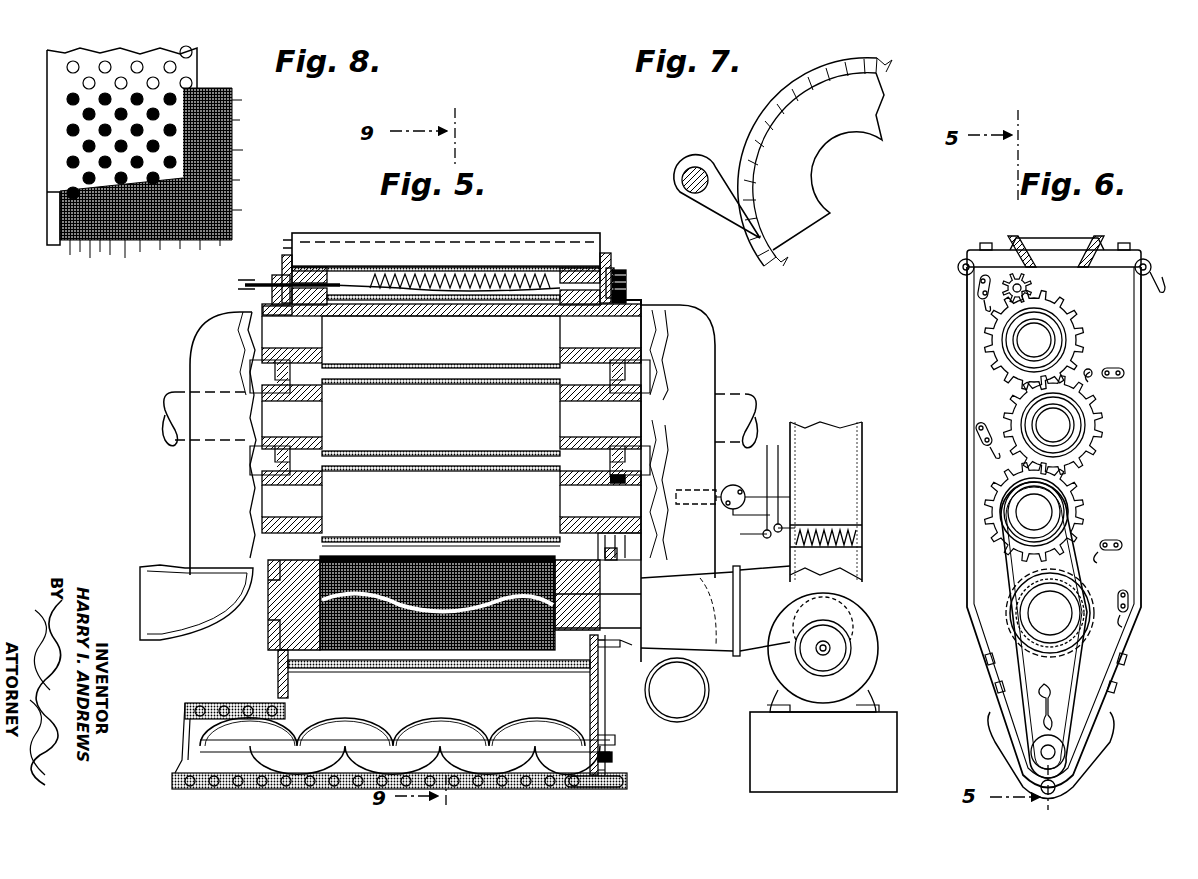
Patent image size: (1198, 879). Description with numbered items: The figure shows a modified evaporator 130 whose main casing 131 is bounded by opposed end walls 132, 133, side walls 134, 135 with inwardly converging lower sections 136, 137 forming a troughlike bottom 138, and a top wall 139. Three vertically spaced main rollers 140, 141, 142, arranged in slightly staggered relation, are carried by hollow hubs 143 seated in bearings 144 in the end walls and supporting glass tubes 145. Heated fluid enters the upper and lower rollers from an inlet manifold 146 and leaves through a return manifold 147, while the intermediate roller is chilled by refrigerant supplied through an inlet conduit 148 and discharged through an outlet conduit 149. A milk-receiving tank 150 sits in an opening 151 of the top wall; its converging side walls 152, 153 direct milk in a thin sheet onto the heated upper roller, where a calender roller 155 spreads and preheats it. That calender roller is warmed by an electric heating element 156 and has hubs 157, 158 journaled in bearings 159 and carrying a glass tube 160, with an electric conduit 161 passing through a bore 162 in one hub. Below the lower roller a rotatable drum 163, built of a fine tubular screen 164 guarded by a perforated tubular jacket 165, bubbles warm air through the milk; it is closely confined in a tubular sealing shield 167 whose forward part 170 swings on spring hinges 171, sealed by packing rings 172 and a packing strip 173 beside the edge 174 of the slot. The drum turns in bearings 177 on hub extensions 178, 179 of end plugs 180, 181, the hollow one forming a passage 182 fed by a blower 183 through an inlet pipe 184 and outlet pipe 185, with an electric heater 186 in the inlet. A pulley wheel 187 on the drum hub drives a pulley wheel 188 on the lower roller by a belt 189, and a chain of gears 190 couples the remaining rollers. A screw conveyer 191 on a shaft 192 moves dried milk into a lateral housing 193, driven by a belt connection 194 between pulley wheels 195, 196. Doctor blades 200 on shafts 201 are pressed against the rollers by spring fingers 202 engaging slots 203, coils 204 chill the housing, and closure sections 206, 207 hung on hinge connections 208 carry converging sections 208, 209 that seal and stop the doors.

In FIG. 5, the evaporator 130 is at (546, 230).
In FIG. 6, the evaporator 130 is at (1156, 235).
In FIG. 5, the main casing 131 is at (350, 222).
In FIG. 6, the main casing 131 is at (962, 383).
In FIG. 5, the end wall 132 is at (283, 240).
In FIG. 5, the end wall 133 is at (612, 254).
In FIG. 6, the side wall 134 is at (968, 360).
In FIG. 6, the side wall 135 is at (1150, 337).
In FIG. 6, the lower section 136 is at (990, 672).
In FIG. 6, the lower section 137 is at (1120, 680).
In FIG. 6, the troughlike bottom 138 is at (1030, 772).
In FIG. 6, the top wall 139 is at (1000, 252).
In FIG. 5, the upper main roller 140 is at (441, 328).
In FIG. 5, the intermediate main roller 141 is at (428, 418).
In FIG. 5, the lower main roller 142 is at (423, 503).
In FIG. 5, the hollow hubs 143 is at (322, 440).
In FIG. 6, the hollow hubs 143 is at (1025, 410).
In FIG. 5, the bearings 144 is at (292, 355).
In FIG. 5, the glass tubes 145 is at (484, 310).
In FIG. 5, the inlet manifold 146 is at (717, 360).
In FIG. 5, the return manifold 147 is at (188, 352).
In FIG. 5, the refrigerant inlet conduit 148 is at (747, 410).
In FIG. 5, the outlet conduit 149 is at (168, 412).
In FIG. 5, the milk-receiving tank 150 is at (474, 252).
In FIG. 6, the milk-receiving tank 150 is at (1056, 238).
In FIG. 6, the opening 151 is at (1102, 246).
In FIG. 6, the side wall 152 is at (1085, 245).
In FIG. 5, the side wall 153 is at (508, 243).
In FIG. 6, the side wall 153 is at (1028, 250).
In FIG. 5, the calender roller 155 is at (430, 276).
In FIG. 5, the electric heating element 156 is at (405, 285).
In FIG. 5, the hub 157 is at (575, 272).
In FIG. 5, the hub 158 is at (283, 262).
In FIG. 5, the bearings 159 is at (614, 276).
In FIG. 5, the glass tube 160 is at (357, 266).
In FIG. 5, the electric conduit 161 is at (260, 282).
In FIG. 5, the bore 162 is at (270, 298).
In FIG. 7, the rotatable drum 163 is at (807, 65).
In FIG. 5, the rotatable drum 163 is at (372, 660).
In FIG. 8, the tubular screen 164 is at (100, 250).
In FIG. 7, the tubular screen 164 is at (783, 247).
In FIG. 5, the tubular screen 164 is at (392, 552).
In FIG. 8, the tubular jacket 165 is at (56, 172).
In FIG. 7, the tubular jacket 165 is at (748, 158).
In FIG. 5, the tubular jacket 165 is at (500, 560).
In FIG. 5, the tubular sealing shield 167 is at (397, 668).
In FIG. 5, the forward part 170 is at (490, 668).
In FIG. 5, the spring hinges 171 is at (440, 668).
In FIG. 5, the packing rings 172 is at (305, 666).
In FIG. 5, the packing strip 173 is at (445, 558).
In FIG. 5, the edge 174 is at (327, 552).
In FIG. 5, the bearings 177 is at (602, 635).
In FIG. 5, the hub extension 178 is at (282, 612).
In FIG. 5, the hub extension 179 is at (612, 647).
In FIG. 5, the end plug 180 is at (292, 645).
In FIG. 5, the end plug 181 is at (565, 668).
In FIG. 5, the passage 182 is at (625, 604).
In FIG. 5, the blower 183 is at (880, 646).
In FIG. 5, the inlet pipe 184 is at (863, 508).
In FIG. 5, the outlet pipe 185 is at (758, 640).
In FIG. 5, the electric heater 186 is at (863, 538).
In FIG. 5, the pulley wheel 187 is at (628, 646).
In FIG. 6, the pulley wheel 187 is at (1052, 590).
In FIG. 5, the pulley wheel 188 is at (630, 480).
In FIG. 6, the pulley wheel 188 is at (1068, 500).
In FIG. 5, the belt 189 is at (645, 548).
In FIG. 6, the belt 189 is at (1012, 572).
In FIG. 5, the chain of gears 190 is at (632, 300).
In FIG. 6, the chain of gears 190 is at (1090, 320).
In FIG. 5, the screw conveyer 191 is at (185, 723).
In FIG. 5, the shaft 192 is at (180, 742).
In FIG. 6, the shaft 192 is at (1060, 752).
In FIG. 5, the housing 193 is at (200, 703).
In FIG. 5, the belt connection 194 is at (612, 722).
In FIG. 6, the belt connection 194 is at (1085, 700).
In FIG. 5, the pulley wheel 195 is at (616, 758).
In FIG. 6, the pulley wheel 195 is at (1035, 757).
In FIG. 5, the pulley wheel 196 is at (620, 566).
In FIG. 6, the pulley wheel 196 is at (1015, 617).
In FIG. 7, the doctor blades 200 is at (727, 214).
In FIG. 7, the shafts 201 is at (682, 182).
In FIG. 6, the spring fingers 202 is at (983, 306).
In FIG. 6, the slots 203 is at (983, 292).
In FIG. 5, the coils 204 is at (623, 783).
In FIG. 6, the coils 204 is at (1056, 783).
In FIG. 6, the closure section 206 is at (968, 441).
In FIG. 6, the closure section 207 is at (1142, 462).
In FIG. 6, the hinge connections 208 is at (956, 263).
In FIG. 6, the converging section 209 is at (1133, 625).